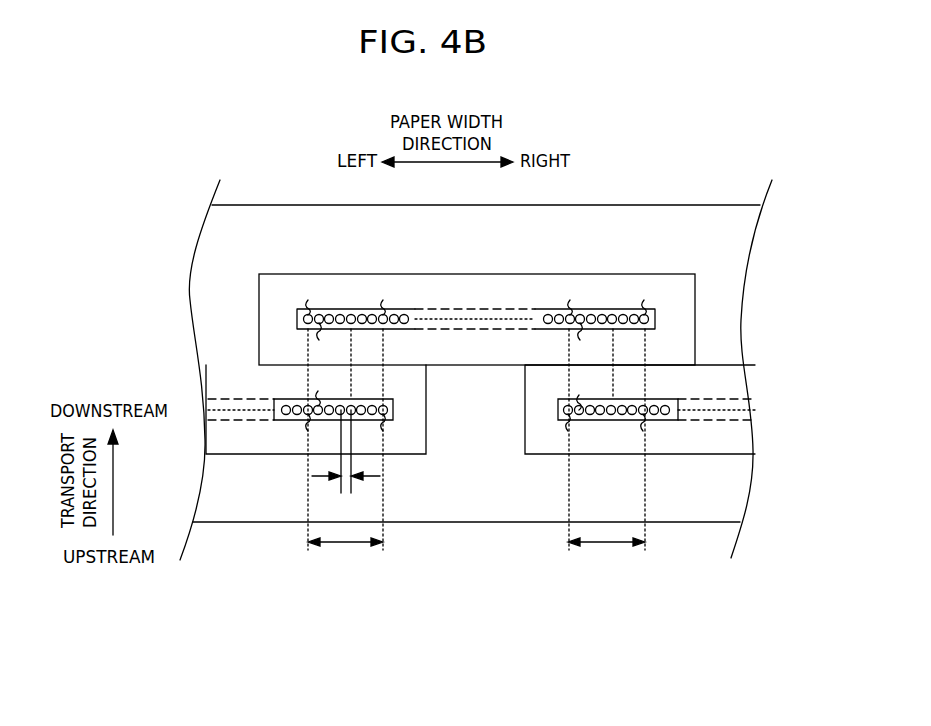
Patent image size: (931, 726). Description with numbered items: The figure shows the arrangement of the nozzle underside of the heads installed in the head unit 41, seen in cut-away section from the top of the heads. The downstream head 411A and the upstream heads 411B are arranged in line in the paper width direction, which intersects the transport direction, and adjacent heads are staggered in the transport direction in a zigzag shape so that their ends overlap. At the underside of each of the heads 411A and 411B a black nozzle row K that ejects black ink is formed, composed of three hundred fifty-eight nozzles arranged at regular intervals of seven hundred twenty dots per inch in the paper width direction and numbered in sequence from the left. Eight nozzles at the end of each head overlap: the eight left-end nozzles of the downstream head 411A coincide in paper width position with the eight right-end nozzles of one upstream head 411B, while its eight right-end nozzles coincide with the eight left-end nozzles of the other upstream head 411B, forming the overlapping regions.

The head unit 41 is at (710, 205).
The downstream head 411A is at (446, 274).
The upstream head 411B is at (250, 522).